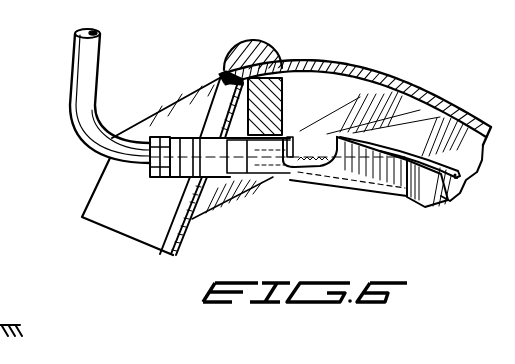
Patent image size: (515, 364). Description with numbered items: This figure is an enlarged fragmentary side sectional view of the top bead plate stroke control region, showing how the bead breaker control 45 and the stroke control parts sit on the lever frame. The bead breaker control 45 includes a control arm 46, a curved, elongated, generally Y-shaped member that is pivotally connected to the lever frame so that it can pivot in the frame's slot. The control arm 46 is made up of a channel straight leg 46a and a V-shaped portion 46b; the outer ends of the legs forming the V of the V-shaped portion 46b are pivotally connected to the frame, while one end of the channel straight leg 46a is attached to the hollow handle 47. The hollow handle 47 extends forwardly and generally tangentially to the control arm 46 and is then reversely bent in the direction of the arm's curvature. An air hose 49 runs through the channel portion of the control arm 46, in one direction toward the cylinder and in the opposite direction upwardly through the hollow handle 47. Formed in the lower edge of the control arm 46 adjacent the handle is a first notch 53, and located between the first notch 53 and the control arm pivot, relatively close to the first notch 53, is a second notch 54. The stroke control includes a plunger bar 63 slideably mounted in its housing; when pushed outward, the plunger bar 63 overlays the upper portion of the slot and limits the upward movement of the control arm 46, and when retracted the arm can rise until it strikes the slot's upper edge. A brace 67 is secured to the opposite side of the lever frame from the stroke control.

The hollow handle 47 is at (90, 82).
The control arm 46 is at (187, 137).
The channel straight leg 46a is at (175, 137).
The V-shaped portion 46b is at (338, 190).
The brace 67 is at (275, 52).
The plunger bar 63 is at (283, 104).
The air hose 49 is at (180, 170).
The first notch 53 is at (190, 172).
The second notch 54 is at (217, 178).
The bead breaker control 45 is at (405, 202).